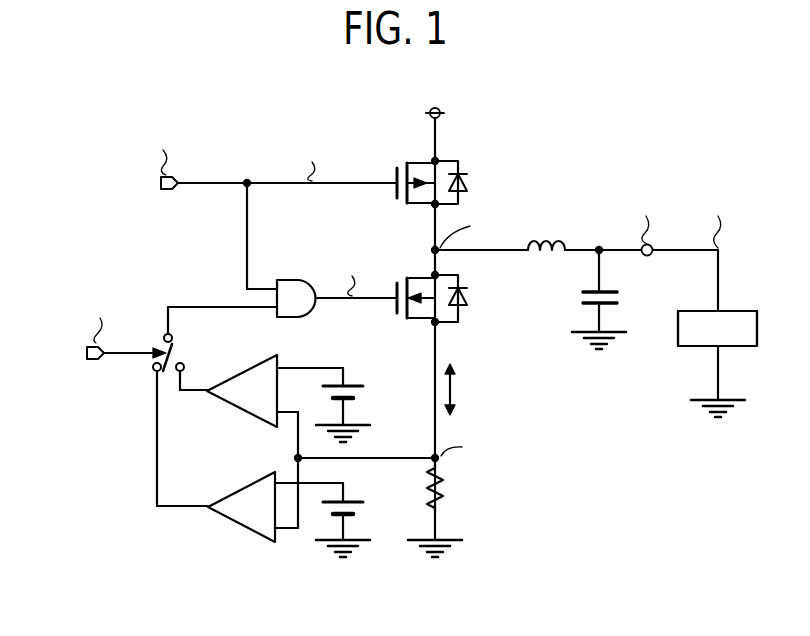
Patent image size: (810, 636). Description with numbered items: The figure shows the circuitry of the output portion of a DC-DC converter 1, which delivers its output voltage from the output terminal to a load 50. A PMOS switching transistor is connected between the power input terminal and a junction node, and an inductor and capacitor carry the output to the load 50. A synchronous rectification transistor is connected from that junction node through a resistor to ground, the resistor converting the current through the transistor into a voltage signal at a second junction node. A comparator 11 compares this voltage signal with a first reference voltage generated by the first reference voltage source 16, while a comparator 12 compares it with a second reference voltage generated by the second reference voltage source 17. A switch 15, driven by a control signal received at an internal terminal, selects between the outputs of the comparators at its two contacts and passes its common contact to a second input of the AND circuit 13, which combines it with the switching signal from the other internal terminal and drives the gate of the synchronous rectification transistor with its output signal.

The DC-DC converter 1 is at (638, 546).
The comparator 11 is at (240, 372).
The comparator 12 is at (238, 528).
The AND circuit 13 is at (291, 279).
The switch 15 is at (154, 324).
The first reference voltage source 16 is at (349, 383).
The second reference voltage source 17 is at (350, 499).
The load 50 is at (745, 311).